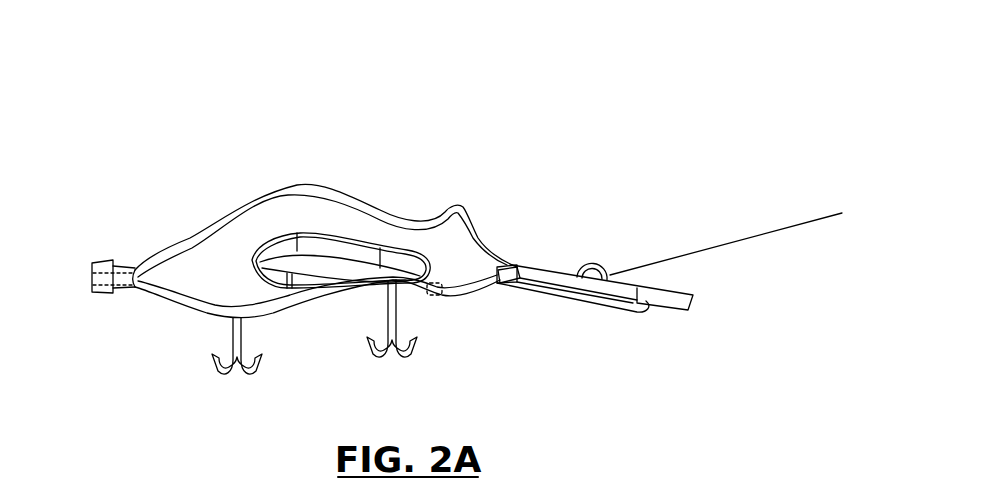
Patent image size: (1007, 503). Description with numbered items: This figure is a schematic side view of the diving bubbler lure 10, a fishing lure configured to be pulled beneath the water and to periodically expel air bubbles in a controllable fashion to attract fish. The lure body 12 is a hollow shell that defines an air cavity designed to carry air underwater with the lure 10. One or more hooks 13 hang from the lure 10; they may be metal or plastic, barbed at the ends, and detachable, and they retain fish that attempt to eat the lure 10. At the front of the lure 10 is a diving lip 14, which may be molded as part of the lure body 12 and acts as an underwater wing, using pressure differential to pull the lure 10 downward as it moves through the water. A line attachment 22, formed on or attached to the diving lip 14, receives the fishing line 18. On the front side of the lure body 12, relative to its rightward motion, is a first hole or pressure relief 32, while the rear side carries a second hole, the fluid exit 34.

The lure 10 is at (108, 84).
The lure body 12 is at (287, 213).
The hooks 13 is at (228, 344).
The diving lip 14 is at (557, 300).
The line 18 is at (780, 231).
The line attachment 22 is at (593, 264).
The pressure relief 32 is at (435, 293).
The fluid exit 34 is at (102, 273).